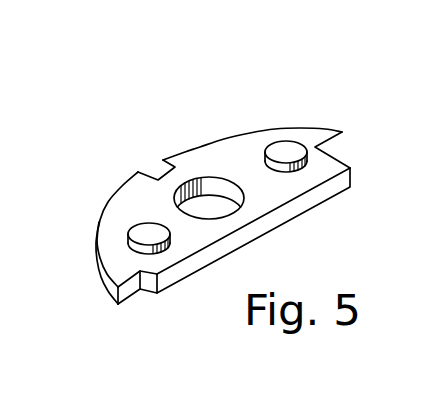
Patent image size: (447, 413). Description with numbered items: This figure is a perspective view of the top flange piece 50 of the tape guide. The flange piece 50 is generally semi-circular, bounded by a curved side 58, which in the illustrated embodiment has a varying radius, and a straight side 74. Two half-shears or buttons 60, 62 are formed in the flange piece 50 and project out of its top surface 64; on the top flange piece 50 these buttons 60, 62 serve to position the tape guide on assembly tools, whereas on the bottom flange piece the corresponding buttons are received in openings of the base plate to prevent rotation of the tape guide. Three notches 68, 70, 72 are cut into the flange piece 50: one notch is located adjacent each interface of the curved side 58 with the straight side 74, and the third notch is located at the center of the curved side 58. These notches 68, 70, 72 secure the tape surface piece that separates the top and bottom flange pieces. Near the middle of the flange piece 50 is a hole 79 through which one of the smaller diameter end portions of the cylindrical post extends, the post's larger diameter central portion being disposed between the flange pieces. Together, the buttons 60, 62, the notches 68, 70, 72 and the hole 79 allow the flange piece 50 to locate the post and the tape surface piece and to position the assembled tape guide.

The top flange piece 50 is at (226, 203).
The curved side 58 is at (100, 268).
The button 60 is at (172, 245).
The button 62 is at (284, 152).
The top surface 64 is at (208, 153).
The notch 68 is at (135, 288).
The notch 70 is at (170, 167).
The notch 72 is at (334, 147).
The straight side 74 is at (274, 219).
The hole 79 is at (222, 186).